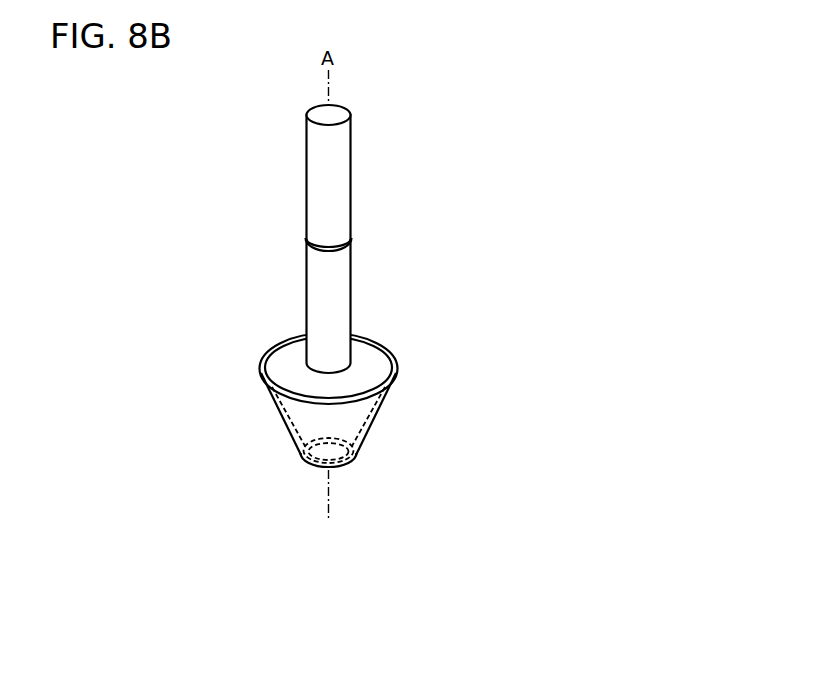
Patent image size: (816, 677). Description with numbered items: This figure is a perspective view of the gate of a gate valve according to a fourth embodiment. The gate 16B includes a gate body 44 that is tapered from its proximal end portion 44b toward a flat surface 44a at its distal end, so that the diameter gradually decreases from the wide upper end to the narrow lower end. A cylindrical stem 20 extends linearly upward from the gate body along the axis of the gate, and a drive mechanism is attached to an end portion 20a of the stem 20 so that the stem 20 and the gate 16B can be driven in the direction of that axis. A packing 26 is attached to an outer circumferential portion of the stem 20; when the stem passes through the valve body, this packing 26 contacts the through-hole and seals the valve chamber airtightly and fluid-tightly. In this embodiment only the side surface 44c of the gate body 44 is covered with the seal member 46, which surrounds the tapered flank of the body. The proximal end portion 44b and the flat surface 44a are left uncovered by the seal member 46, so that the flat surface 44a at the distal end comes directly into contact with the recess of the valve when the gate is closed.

The gate 16B is at (366, 298).
The stem 20 is at (325, 282).
The end portion of the stem 20a is at (335, 112).
The packing 26 is at (328, 250).
The gate body 44 is at (365, 408).
The flat surface 44a is at (335, 469).
The proximal end portion 44b is at (369, 354).
The side surface 44c is at (272, 412).
The seal member 46 is at (262, 369).